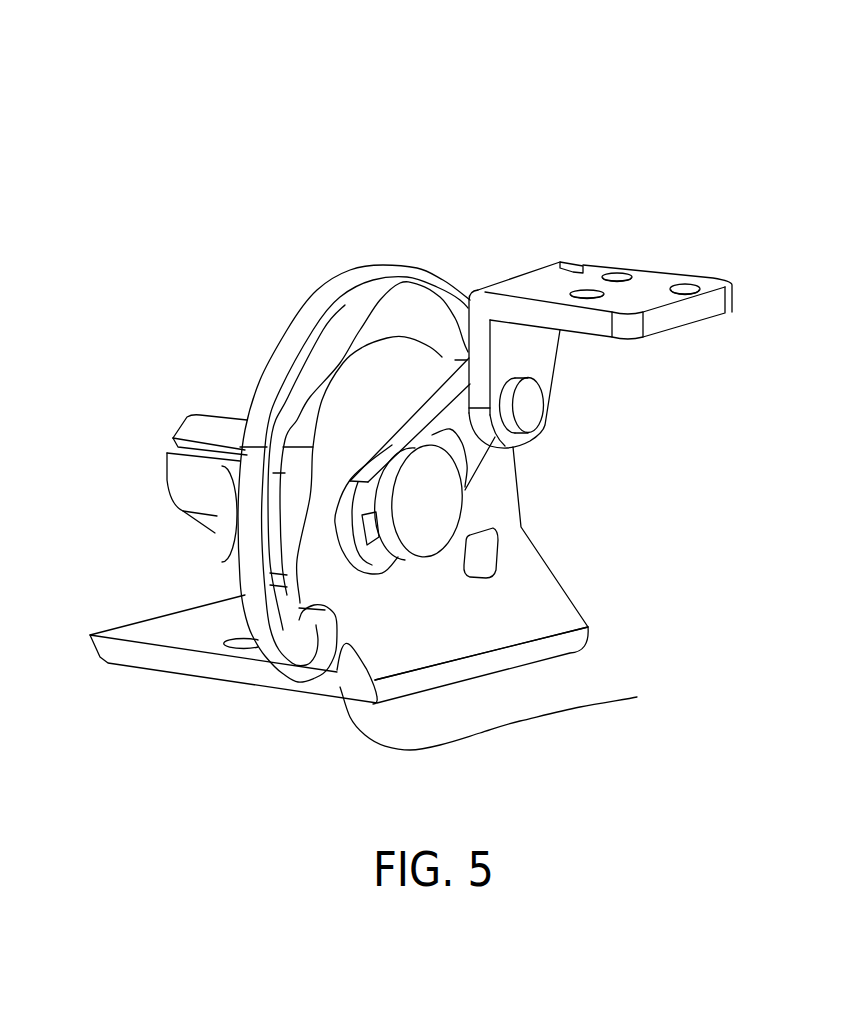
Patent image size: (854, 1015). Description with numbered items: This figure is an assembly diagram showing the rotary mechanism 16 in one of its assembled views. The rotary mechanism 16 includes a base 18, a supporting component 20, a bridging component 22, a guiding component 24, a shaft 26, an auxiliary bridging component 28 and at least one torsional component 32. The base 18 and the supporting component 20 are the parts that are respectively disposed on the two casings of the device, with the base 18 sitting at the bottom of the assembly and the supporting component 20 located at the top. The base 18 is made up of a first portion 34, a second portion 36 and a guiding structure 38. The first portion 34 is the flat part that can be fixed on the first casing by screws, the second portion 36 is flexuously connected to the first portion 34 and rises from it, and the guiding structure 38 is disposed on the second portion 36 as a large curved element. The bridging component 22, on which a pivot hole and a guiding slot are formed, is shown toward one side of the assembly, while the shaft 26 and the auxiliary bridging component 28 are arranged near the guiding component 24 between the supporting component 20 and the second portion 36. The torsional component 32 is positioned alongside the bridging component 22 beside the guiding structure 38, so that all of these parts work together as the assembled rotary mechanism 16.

The rotary mechanism 16 is at (668, 108).
The base 18 is at (432, 554).
The supporting component 20 is at (657, 282).
The bridging component 22 is at (227, 537).
The guiding component 24 is at (532, 395).
The shaft 26 is at (440, 507).
The auxiliary bridging component 28 is at (477, 453).
The torsional component 32 is at (210, 427).
The first portion 34 is at (403, 672).
The second portion 36 is at (545, 590).
The guiding structure 38 is at (390, 313).